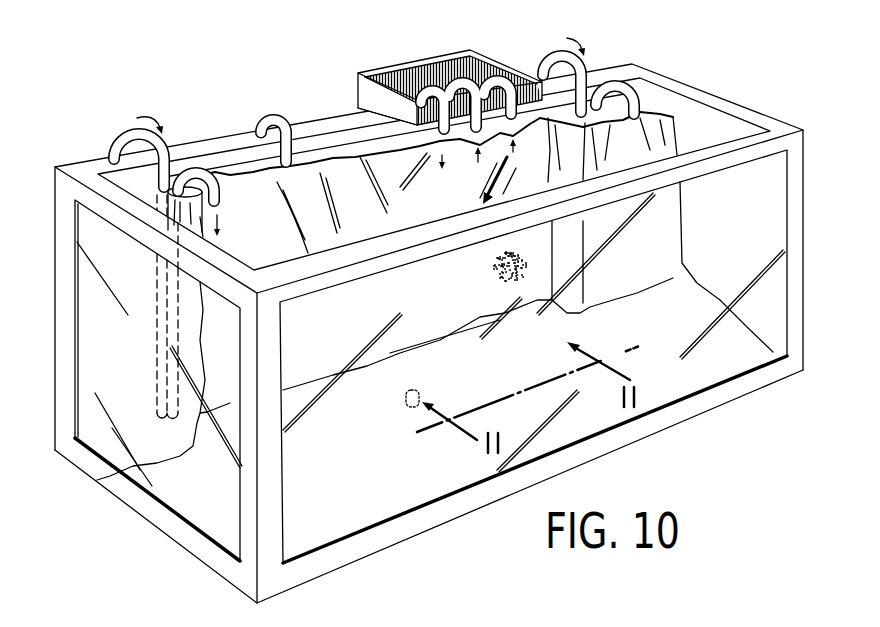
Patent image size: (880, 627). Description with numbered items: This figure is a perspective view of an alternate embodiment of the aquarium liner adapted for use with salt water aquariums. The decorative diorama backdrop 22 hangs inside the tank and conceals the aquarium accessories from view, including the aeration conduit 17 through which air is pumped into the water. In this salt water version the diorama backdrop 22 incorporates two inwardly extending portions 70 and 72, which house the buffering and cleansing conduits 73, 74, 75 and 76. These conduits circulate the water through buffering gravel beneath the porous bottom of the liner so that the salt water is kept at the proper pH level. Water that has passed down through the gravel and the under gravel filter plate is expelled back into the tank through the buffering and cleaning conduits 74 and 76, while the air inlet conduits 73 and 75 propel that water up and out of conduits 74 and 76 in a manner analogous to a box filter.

The aeration conduit 17 is at (278, 120).
The diorama backdrop 22 is at (253, 163).
The inwardly extending portion 70 is at (203, 227).
The inwardly extending portion 72 is at (673, 117).
The air inlet conduit 73 is at (118, 128).
The buffering and cleaning conduit 74 is at (214, 205).
The air inlet conduit 75 is at (547, 62).
The buffering and cleaning conduit 76 is at (627, 97).